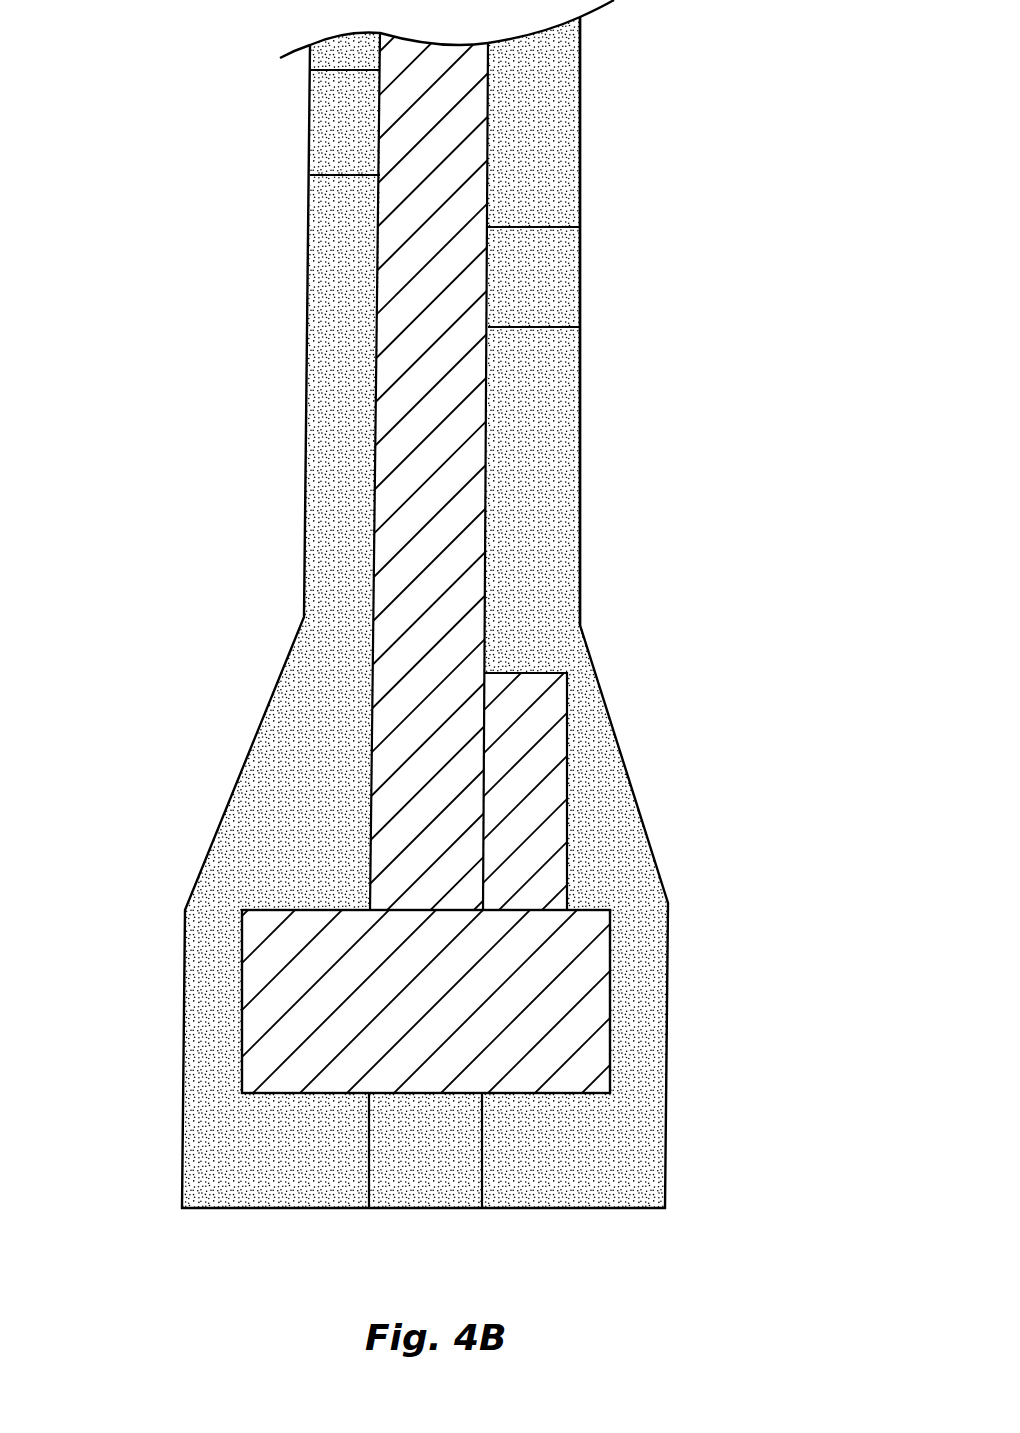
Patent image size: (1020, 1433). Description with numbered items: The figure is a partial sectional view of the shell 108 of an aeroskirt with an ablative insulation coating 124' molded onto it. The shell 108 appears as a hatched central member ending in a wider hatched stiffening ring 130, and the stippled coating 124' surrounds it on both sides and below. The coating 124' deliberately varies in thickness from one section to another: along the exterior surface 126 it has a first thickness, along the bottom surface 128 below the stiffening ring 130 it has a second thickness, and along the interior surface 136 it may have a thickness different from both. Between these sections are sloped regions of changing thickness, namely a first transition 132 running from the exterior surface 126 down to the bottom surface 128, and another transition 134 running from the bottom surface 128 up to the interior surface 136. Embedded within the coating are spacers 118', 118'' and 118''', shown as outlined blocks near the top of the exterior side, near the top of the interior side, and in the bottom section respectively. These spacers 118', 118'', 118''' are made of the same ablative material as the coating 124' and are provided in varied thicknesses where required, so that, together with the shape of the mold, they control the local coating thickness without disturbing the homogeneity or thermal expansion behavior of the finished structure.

The shell 108 is at (230, 365).
The spacer 118' is at (277, 122).
The spacer 118'' is at (463, 1190).
The spacer 118''' is at (608, 277).
The ablative insulation coating 124' is at (650, 321).
The exterior surface 126 is at (308, 246).
The bottom surface 128 is at (290, 1210).
The stiffening ring 130 is at (610, 998).
The first transition 132 is at (240, 770).
The transition 134 is at (637, 811).
The interior surface 136 is at (580, 497).